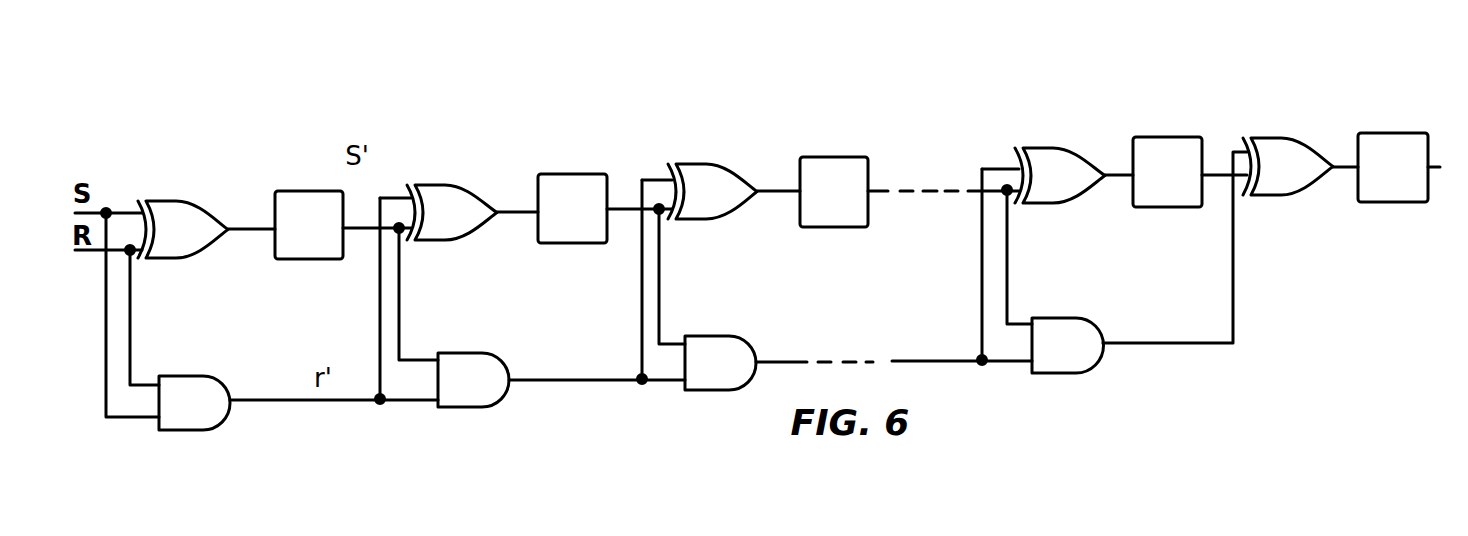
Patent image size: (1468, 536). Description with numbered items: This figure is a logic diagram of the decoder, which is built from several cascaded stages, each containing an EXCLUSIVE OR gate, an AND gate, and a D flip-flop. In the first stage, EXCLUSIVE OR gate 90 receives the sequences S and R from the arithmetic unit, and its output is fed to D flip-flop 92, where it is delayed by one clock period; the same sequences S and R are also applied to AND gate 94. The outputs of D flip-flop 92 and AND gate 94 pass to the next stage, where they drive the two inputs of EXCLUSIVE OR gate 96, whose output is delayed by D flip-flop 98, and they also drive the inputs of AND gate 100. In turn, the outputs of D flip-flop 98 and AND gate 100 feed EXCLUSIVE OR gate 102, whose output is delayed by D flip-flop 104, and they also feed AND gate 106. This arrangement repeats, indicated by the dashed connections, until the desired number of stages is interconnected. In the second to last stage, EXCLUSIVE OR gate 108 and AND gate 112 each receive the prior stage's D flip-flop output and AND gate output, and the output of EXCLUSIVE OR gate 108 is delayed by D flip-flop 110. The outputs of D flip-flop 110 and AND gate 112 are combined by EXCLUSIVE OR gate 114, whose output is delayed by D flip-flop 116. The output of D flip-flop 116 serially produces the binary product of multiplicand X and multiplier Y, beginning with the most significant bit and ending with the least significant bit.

The EXCLUSIVE OR gate 90 is at (188, 200).
The D flip-flop 92 is at (297, 190).
The AND gate 94 is at (185, 375).
The EXCLUSIVE OR gate 96 is at (445, 184).
The D flip-flop 98 is at (573, 173).
The AND gate 100 is at (468, 352).
The EXCLUSIVE OR gate 102 is at (712, 163).
The D flip-flop 104 is at (830, 156).
The AND gate 106 is at (712, 335).
The EXCLUSIVE OR gate 108 is at (1057, 147).
The D flip-flop 110 is at (1168, 136).
The AND gate 112 is at (1060, 317).
The EXCLUSIVE OR gate 114 is at (1282, 137).
The D flip-flop 116 is at (1392, 132).